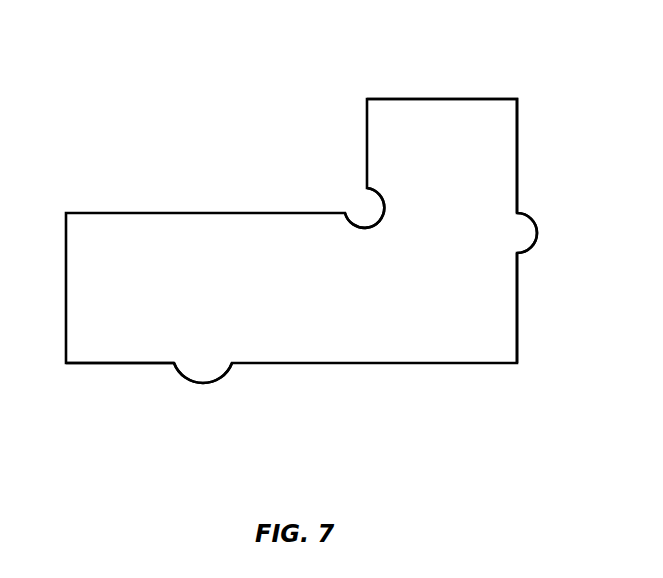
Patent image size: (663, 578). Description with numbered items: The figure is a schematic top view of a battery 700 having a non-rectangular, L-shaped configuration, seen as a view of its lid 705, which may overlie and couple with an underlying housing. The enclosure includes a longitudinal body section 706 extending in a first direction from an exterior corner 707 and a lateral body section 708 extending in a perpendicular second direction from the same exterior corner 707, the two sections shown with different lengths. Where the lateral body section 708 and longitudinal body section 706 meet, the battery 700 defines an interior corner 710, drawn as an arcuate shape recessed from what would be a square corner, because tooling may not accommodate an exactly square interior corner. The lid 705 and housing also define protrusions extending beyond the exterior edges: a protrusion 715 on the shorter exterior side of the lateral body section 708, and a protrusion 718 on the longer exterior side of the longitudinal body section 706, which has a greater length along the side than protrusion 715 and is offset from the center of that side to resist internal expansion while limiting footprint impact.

The battery 700 is at (80, 93).
The lid 705 is at (517, 197).
The longitudinal body section 706 is at (130, 365).
The exterior corner 707 is at (520, 365).
The lateral body section 708 is at (517, 128).
The interior corner 710 is at (357, 222).
The protrusion 715 is at (537, 233).
The protrusion 718 is at (232, 368).